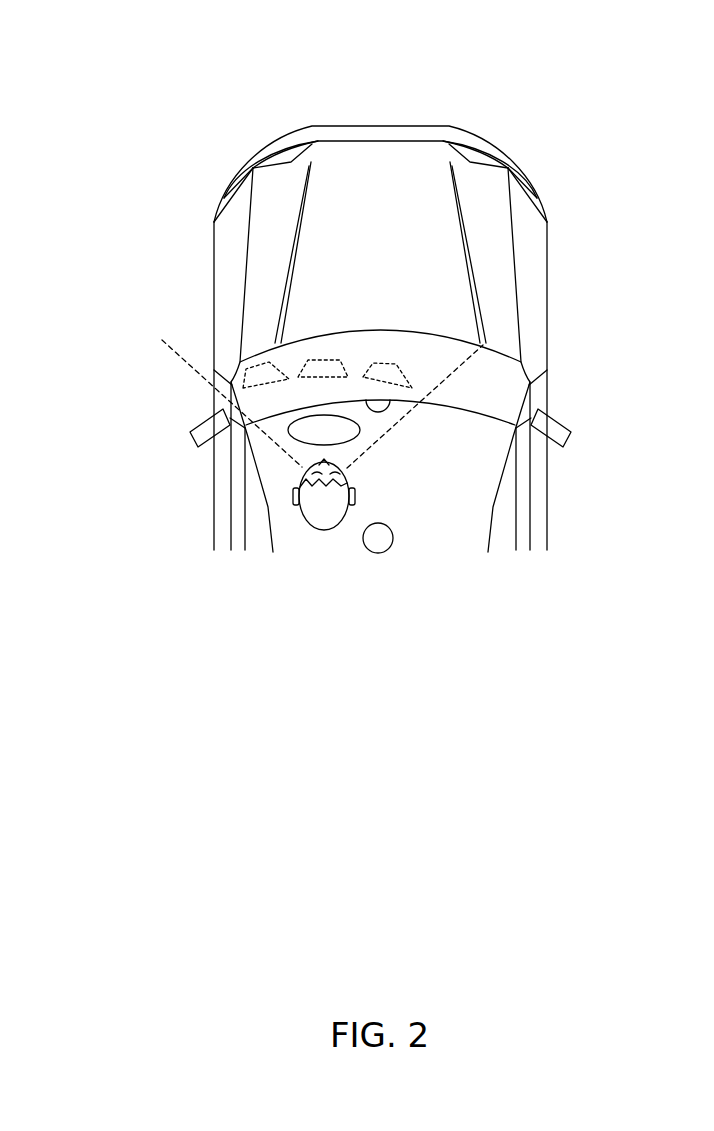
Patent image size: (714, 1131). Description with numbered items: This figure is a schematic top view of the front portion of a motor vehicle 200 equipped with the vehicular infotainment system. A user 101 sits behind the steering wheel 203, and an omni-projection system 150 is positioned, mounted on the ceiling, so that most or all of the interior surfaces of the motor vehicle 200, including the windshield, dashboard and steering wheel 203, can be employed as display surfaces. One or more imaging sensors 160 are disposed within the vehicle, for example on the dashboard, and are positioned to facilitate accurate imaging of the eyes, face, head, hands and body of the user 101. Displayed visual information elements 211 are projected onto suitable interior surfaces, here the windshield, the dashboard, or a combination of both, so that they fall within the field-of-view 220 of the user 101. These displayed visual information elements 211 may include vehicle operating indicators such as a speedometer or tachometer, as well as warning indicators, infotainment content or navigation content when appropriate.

The motor vehicle 200 is at (153, 89).
The displayed visual information elements 211 is at (320, 360).
The imaging sensors 160 is at (391, 412).
The steering wheel 203 is at (358, 426).
The field-of-view 220 is at (367, 455).
The user 101 is at (311, 540).
The omni-projection system 150 is at (391, 550).